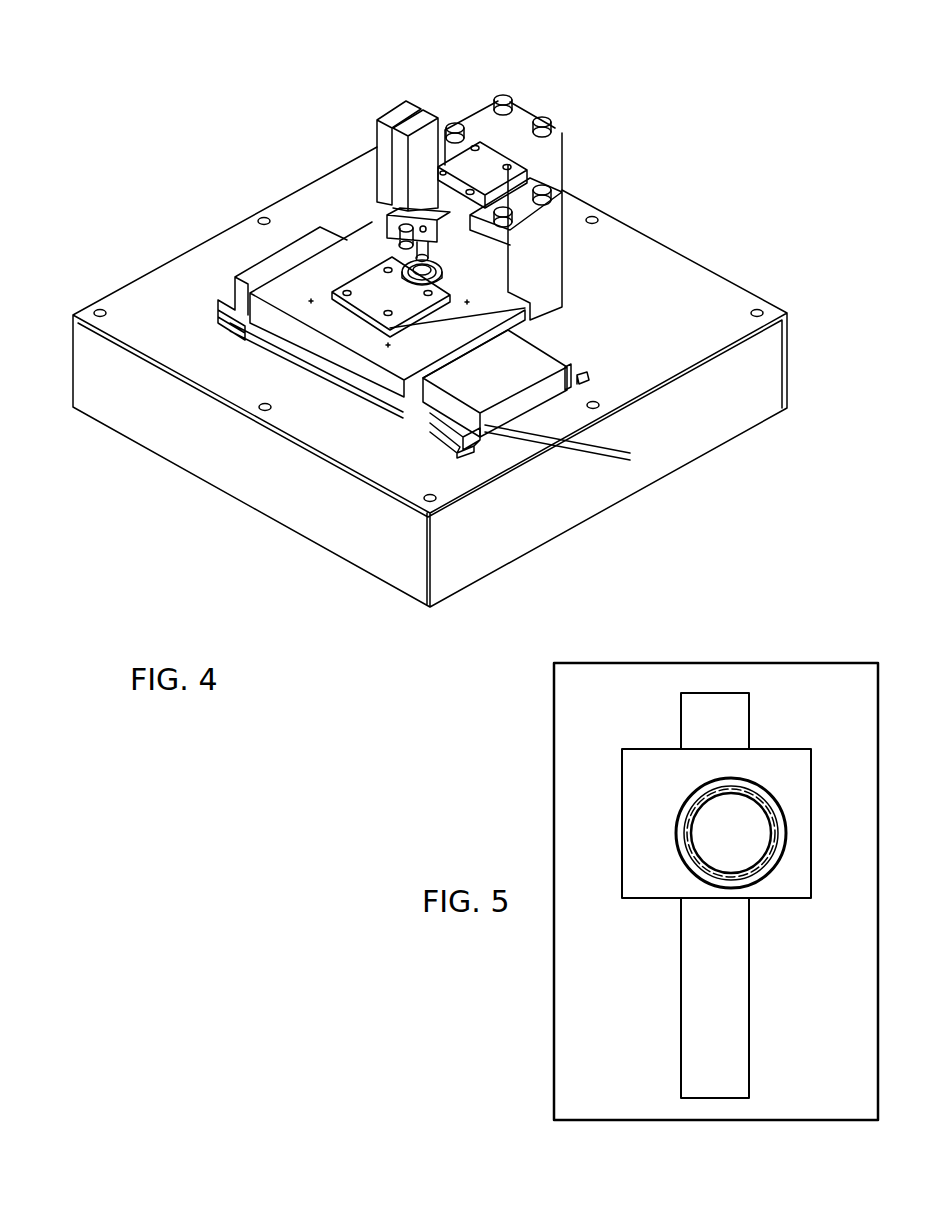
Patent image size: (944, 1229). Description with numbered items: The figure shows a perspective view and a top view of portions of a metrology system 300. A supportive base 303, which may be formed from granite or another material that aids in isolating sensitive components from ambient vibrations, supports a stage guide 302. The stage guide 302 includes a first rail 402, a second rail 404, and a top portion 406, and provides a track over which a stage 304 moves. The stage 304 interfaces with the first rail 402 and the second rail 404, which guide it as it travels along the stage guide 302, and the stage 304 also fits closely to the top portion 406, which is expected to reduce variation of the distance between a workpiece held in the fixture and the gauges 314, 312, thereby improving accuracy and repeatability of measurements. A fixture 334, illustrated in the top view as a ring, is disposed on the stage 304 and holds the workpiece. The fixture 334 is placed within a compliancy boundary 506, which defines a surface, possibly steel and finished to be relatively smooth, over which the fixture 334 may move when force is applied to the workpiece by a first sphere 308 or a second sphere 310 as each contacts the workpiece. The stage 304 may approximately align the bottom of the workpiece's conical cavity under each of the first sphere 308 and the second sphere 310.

In FIG. 4, the metrology system 300 is at (505, 76).
In FIG. 4, the stage guide 302 is at (235, 277).
In FIG. 5, the stage guide 302 is at (681, 985).
In FIG. 4, the supportive base 303 is at (87, 414).
In FIG. 5, the supportive base 303 is at (630, 1121).
In FIG. 4, the stage 304 is at (222, 228).
In FIG. 5, the stage 304 is at (622, 840).
In FIG. 4, the first sphere 308 is at (422, 252).
In FIG. 4, the second sphere 310 is at (387, 224).
In FIG. 4, the gauge 312 is at (377, 121).
In FIG. 4, the gauge 314 is at (432, 115).
In FIG. 4, the fixture 334 is at (445, 272).
In FIG. 5, the fixture 334 is at (702, 797).
In FIG. 4, the first rail 402 is at (577, 380).
In FIG. 4, the second rail 404 is at (475, 437).
In FIG. 4, the top portion 406 is at (487, 383).
In FIG. 5, the compliancy boundary 506 is at (678, 836).